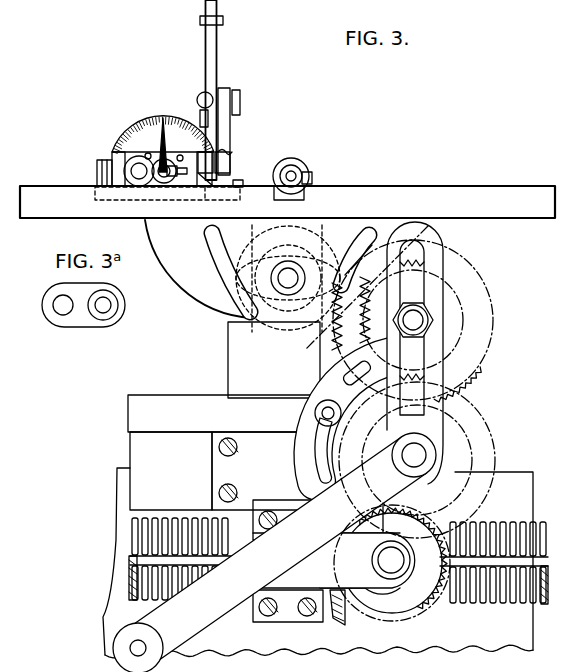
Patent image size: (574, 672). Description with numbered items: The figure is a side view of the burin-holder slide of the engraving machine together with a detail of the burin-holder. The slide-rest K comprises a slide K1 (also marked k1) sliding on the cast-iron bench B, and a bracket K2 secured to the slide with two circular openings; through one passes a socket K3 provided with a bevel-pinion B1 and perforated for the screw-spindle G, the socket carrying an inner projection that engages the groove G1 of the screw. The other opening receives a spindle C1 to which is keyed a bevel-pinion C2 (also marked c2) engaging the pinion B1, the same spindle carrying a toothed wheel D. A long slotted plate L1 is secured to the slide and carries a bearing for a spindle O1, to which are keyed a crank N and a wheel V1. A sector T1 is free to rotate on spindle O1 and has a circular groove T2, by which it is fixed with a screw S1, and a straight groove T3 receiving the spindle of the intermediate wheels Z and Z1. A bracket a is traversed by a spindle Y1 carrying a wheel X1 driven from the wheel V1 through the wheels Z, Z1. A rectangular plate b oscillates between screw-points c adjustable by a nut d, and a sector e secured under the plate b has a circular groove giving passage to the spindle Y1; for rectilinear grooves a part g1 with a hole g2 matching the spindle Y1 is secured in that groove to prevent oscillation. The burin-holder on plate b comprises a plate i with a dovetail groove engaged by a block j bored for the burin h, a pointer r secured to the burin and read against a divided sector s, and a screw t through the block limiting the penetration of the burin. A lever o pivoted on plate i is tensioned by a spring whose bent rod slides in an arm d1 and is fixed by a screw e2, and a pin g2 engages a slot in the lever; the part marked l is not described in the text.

In FIG. 3, the lever o is at (203, 90).
In FIG. 3, the slide-rest K is at (163, 131).
In FIG. 3, the divided sector s is at (167, 145).
In FIG. 3, the pointer r is at (161, 146).
In FIG. 3, the plate i is at (144, 171).
In FIG. 3, the burin h is at (177, 150).
In FIG. 3, the screw t is at (118, 163).
In FIG. 3, the slide k1 is at (200, 118).
In FIG. 3, the arm d1 is at (230, 133).
In FIG. 3, the screw e2 is at (240, 102).
In FIG. 3, the pin / hole g2 is at (232, 154).
In FIG. 3A, the pin / hole g2 is at (58, 313).
In FIG. 3, the block l is at (214, 169).
In FIG. 3, the bevel-pinion c2 is at (240, 180).
In FIG. 3, the block j is at (188, 190).
In FIG. 3, the nut d is at (295, 165).
In FIG. 3, the screw-points c is at (311, 176).
In FIG. 3, the bracket a is at (318, 186).
In FIG. 3, the rectangular plate b is at (287, 202).
In FIG. 3, the sector e is at (198, 269).
In FIG. 3, the wheel X1 is at (288, 278).
In FIG. 3, the spindle Y1 is at (290, 286).
In FIG. 3, the long plate L1 is at (219, 413).
In FIG. 3, the slide K1 is at (171, 471).
In FIG. 3, the bracket K2 is at (306, 513).
In FIG. 3, the socket K3 is at (256, 522).
In FIG. 3, the groove G1 is at (140, 560).
In FIG. 3, the screw-spindle G is at (140, 587).
In FIG. 3, the cast-iron bench B is at (494, 561).
In FIG. 3, the toothed wheel D is at (394, 560).
In FIG. 3, the spindle C1 is at (367, 560).
In FIG. 3, the bevel-pinion B1 is at (345, 620).
In FIG. 3, the sector T1 is at (345, 419).
In FIG. 3, the circular groove T2 is at (356, 377).
In FIG. 3, the screw S1 is at (334, 420).
In FIG. 3, the straight groove T3 is at (415, 353).
In FIG. 3, the crank N is at (270, 554).
In FIG. 3, the spindle O1 is at (412, 466).
In FIG. 3, the intermediate wheel Z is at (462, 338).
In FIG. 3, the intermediate wheel Z1 is at (468, 374).
In FIG. 3, the wheel V1 is at (490, 451).
In FIG. 3, the bevel-pinion C2 is at (392, 621).
In FIG. 3A, the part g1 is at (82, 323).